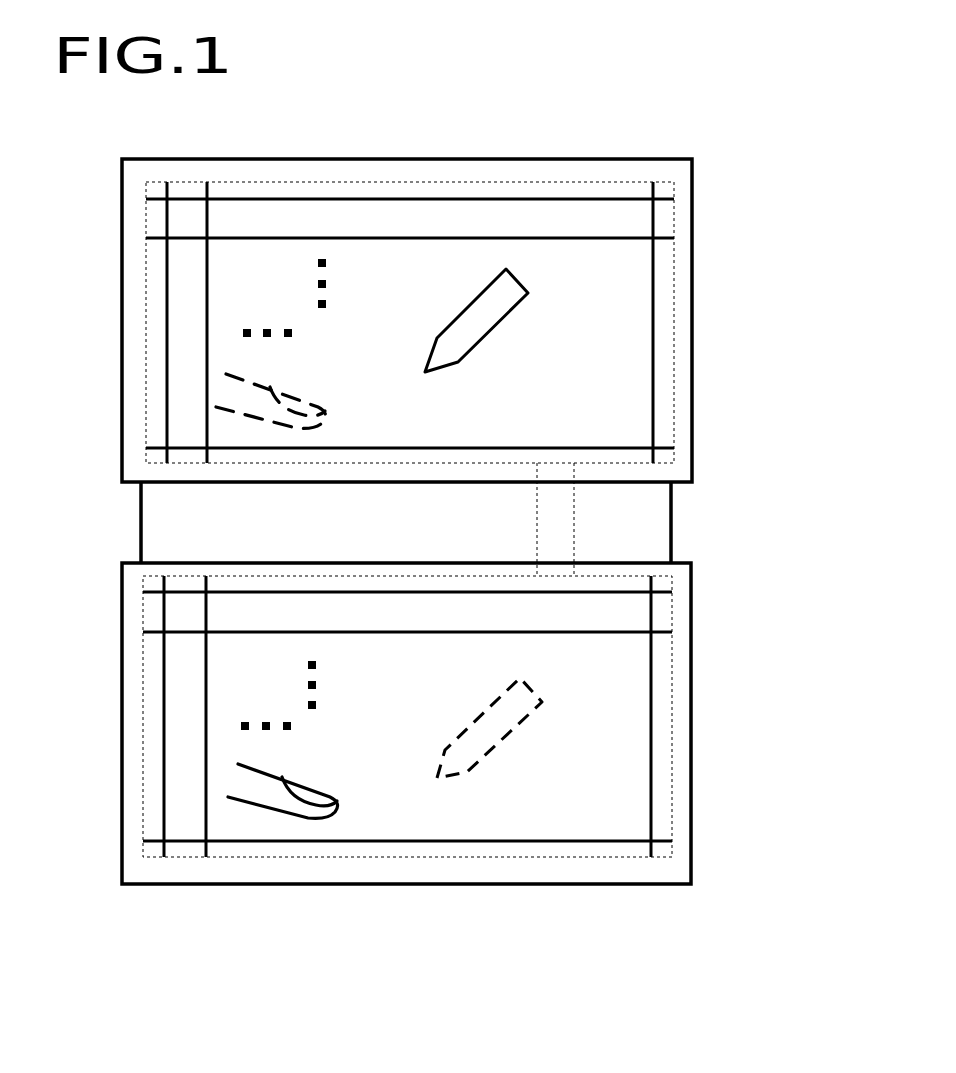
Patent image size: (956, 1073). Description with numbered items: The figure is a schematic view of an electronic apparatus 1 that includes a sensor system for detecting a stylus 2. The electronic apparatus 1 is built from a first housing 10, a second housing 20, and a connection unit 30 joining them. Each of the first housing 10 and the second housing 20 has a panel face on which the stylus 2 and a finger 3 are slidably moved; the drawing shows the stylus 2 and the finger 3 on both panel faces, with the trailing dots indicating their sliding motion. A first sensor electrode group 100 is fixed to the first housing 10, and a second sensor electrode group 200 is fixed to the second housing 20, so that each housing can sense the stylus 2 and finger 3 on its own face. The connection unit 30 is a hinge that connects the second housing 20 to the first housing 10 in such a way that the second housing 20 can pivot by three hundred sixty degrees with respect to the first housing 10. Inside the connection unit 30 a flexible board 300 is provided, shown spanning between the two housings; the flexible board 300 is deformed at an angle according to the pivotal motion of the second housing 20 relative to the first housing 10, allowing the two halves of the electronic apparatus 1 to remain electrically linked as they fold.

The electronic apparatus 1 is at (410, 115).
The stylus 2 is at (508, 315).
The finger 3 is at (282, 387).
The first housing 10 is at (691, 698).
The first sensor electrode group 100 is at (668, 806).
The second housing 20 is at (692, 328).
The second sensor electrode group 200 is at (672, 250).
The connection unit 30 is at (671, 512).
The flexible board 300 is at (537, 527).